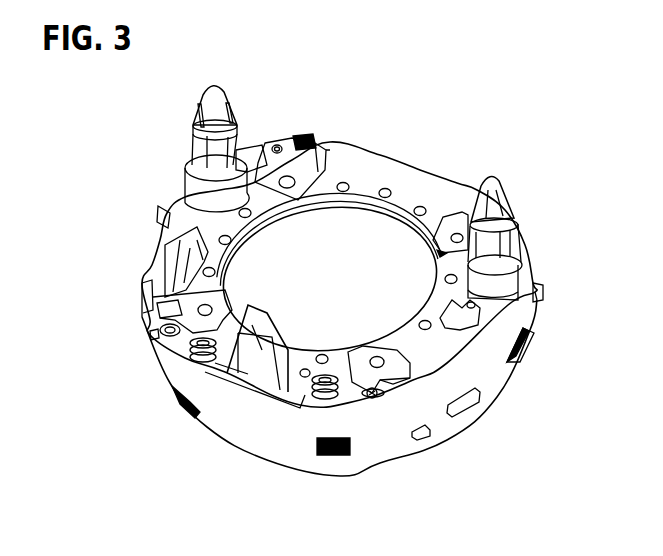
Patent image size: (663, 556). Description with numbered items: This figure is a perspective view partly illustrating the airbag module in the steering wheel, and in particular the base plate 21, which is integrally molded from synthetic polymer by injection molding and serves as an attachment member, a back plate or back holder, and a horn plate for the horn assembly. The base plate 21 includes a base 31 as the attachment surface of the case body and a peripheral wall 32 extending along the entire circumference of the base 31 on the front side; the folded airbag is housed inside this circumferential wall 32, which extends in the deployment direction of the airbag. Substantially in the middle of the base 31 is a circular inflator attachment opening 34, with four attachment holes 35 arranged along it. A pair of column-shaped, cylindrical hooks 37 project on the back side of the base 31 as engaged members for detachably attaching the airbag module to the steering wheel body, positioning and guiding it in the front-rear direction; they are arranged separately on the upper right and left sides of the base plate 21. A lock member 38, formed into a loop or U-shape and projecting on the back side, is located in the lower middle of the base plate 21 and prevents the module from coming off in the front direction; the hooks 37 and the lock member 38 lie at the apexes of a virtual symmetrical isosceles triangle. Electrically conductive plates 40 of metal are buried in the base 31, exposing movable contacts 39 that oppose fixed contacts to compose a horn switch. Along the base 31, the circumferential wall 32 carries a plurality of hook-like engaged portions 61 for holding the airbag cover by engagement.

The base plate 21 is at (433, 178).
The base 31 is at (383, 162).
The peripheral wall 32 is at (502, 380).
The inflator attachment opening 34 is at (323, 352).
The attachment holes 35 is at (289, 176).
The hooks 37 is at (223, 80).
The lock member 38 is at (257, 333).
The movable contacts 39 is at (277, 144).
The electrically conductive plates 40 is at (329, 147).
The engaged portions 61 is at (170, 220).